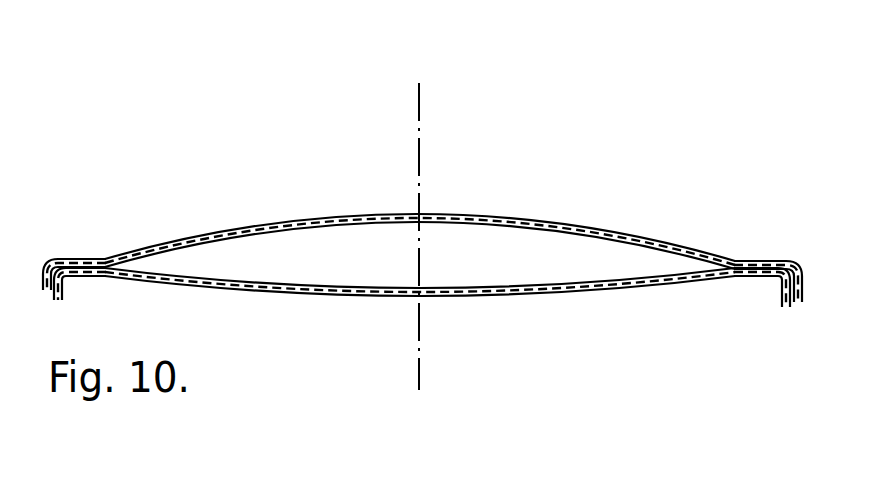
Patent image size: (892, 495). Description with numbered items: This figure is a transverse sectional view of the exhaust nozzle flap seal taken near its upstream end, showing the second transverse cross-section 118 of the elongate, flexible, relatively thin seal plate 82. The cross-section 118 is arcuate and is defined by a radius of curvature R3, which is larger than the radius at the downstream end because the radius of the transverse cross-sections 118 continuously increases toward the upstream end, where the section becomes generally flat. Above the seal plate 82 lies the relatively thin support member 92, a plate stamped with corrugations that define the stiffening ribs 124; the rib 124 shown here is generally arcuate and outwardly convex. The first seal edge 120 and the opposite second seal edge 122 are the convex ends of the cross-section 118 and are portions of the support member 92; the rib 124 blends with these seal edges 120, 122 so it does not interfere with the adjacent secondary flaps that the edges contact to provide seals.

The seal plate 82 is at (652, 290).
The support member 92 is at (593, 229).
The transverse cross-section 118 is at (552, 294).
The stiffening rib 124 is at (523, 215).
The first seal edge 120 is at (60, 258).
The second seal edge 122 is at (782, 260).
The radius of curvature R3 is at (308, 285).